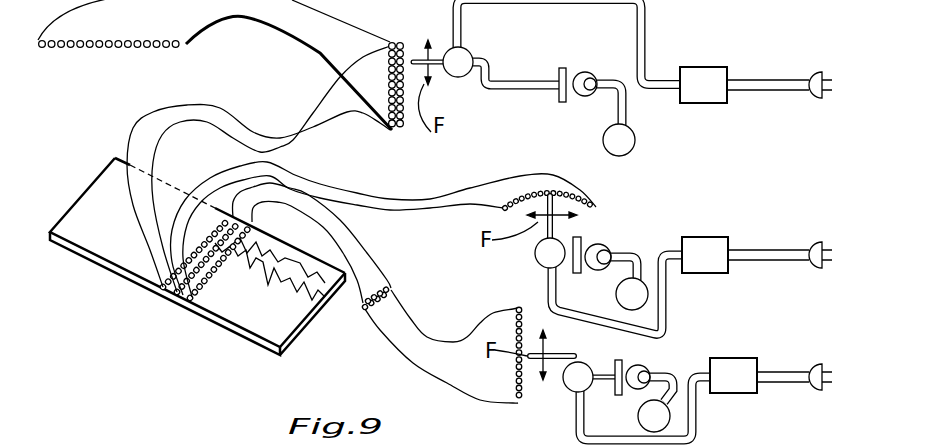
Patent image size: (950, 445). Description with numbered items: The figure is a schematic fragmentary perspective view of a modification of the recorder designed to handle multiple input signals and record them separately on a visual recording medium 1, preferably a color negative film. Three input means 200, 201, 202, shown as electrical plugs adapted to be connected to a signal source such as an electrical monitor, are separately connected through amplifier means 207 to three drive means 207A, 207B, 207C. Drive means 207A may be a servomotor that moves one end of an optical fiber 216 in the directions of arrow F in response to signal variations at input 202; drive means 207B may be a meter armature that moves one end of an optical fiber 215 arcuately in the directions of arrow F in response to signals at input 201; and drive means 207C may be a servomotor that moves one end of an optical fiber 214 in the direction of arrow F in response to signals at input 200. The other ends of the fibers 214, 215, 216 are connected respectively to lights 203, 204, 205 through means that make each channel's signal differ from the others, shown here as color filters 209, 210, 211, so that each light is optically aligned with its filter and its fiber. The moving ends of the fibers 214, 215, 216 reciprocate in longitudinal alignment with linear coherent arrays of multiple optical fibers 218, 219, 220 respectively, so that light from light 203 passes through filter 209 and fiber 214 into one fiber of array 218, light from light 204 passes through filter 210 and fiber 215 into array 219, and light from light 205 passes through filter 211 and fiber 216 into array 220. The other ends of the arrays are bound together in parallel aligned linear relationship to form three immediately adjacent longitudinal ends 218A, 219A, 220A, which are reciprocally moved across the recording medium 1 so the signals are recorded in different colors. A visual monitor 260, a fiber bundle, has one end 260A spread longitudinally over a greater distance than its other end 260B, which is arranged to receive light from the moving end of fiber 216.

The recording medium 1 is at (95, 203).
The input means 200 is at (815, 362).
The input means 201 is at (815, 243).
The input means 202 is at (812, 75).
The light 203 is at (643, 368).
The light 204 is at (607, 247).
The light 205 is at (584, 97).
The amplifier means 207 is at (703, 95).
The drive means 207A is at (462, 76).
The drive means 207B is at (537, 265).
The drive means 207C is at (567, 384).
The color filter 209 is at (617, 393).
The color filter 210 is at (583, 240).
The color filter 211 is at (558, 71).
The optical fiber 214 is at (554, 352).
The optical fiber 215 is at (545, 230).
The optical fiber 216 is at (431, 46).
The linear coherent array of optical fibers 218 is at (427, 337).
The array end 218A is at (192, 300).
The linear coherent array of optical fibers 219 is at (457, 191).
The array end 219A is at (177, 295).
The linear coherent array of optical fibers 220 is at (330, 86).
The array end 220A is at (163, 288).
The visual monitor 260 is at (238, 22).
The monitor end 260A is at (112, 52).
The monitor end 260B is at (391, 90).